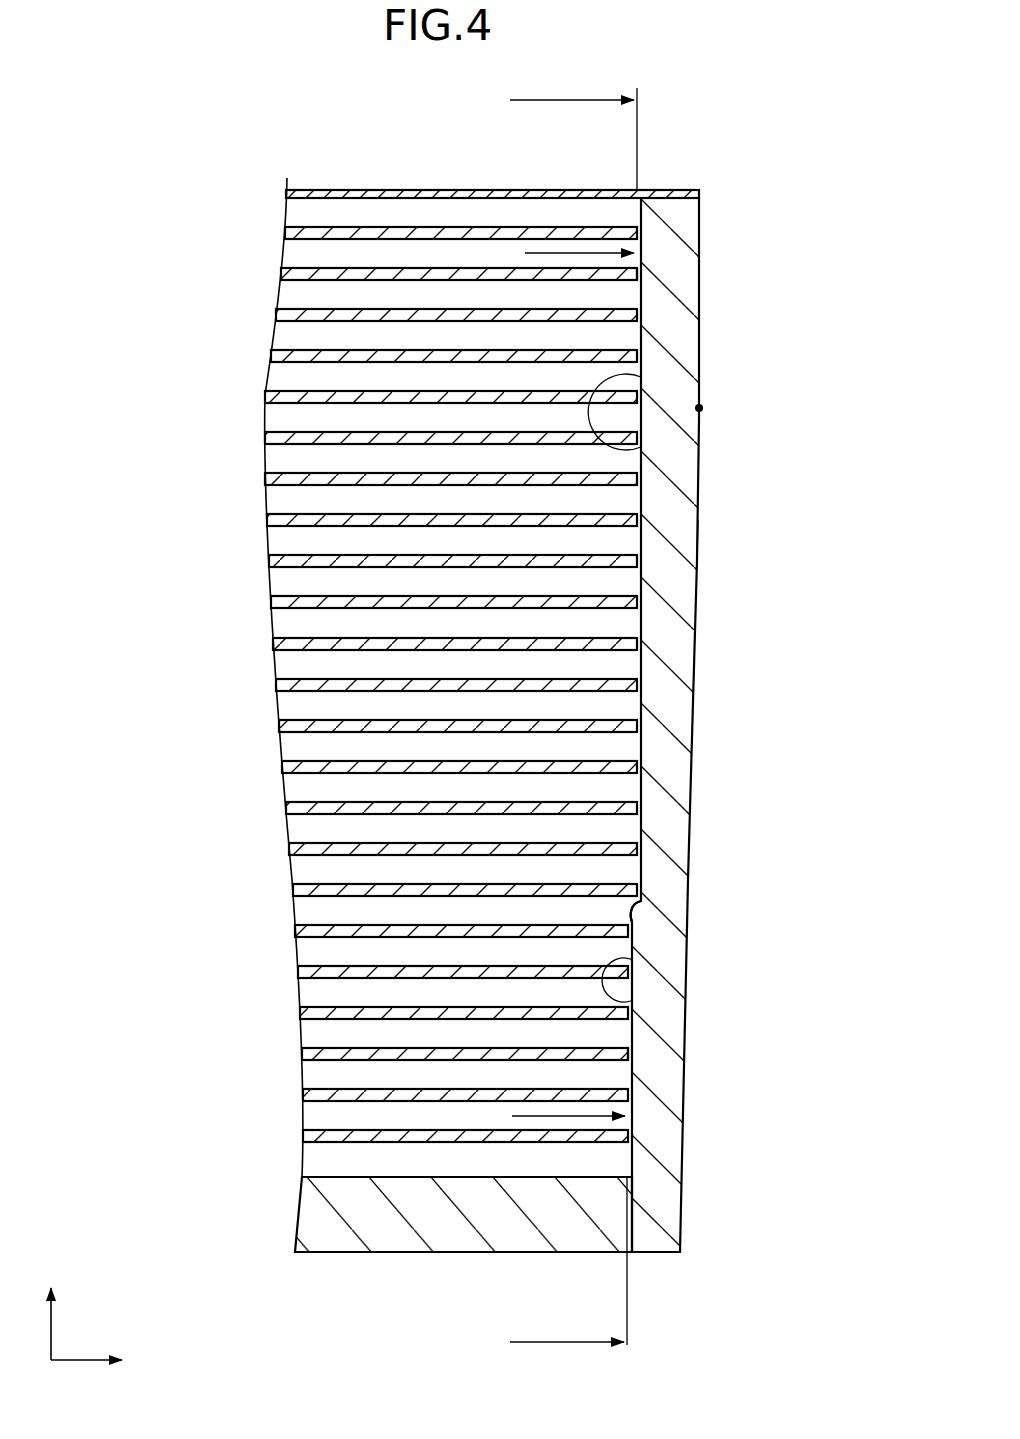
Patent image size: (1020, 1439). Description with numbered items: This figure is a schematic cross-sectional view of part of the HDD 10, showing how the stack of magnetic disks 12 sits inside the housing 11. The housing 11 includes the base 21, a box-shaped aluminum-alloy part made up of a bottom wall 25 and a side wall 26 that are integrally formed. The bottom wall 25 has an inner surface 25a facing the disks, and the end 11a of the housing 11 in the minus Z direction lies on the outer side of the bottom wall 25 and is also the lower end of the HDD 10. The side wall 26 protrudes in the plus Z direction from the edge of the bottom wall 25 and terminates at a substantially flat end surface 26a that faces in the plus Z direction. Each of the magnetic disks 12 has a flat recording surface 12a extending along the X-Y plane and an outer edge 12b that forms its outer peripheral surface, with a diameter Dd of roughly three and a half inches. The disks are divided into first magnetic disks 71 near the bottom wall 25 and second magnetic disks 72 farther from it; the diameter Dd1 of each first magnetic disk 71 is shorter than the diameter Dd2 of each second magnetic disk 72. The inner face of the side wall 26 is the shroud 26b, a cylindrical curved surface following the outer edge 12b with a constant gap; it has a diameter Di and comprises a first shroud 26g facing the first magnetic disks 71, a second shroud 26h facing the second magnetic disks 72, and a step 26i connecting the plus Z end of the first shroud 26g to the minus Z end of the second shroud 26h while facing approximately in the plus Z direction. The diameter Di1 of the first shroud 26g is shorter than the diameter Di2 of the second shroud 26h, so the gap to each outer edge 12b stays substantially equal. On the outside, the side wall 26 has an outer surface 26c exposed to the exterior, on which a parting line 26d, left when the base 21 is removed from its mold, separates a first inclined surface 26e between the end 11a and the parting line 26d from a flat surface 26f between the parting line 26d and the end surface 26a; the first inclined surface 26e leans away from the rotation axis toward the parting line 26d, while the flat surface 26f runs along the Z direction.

The HDD 10 is at (124, 122).
The housing 11 is at (693, 184).
The end 11a is at (312, 1252).
The magnetic disks 12 is at (297, 274).
The recording surface 12a is at (378, 226).
The outer edge 12b is at (641, 268).
The base 21 is at (680, 601).
The bottom wall 25 is at (308, 1212).
The inner surface 25a is at (326, 1176).
The side wall 26 is at (711, 725).
The end surface 26a is at (645, 189).
The shroud 26b is at (617, 450).
The outer surface 26c is at (696, 540).
The parting line 26d is at (703, 409).
The first inclined surface 26e is at (697, 540).
The flat surface 26f is at (698, 322).
The first shroud 26g is at (628, 1002).
The second shroud 26h is at (614, 412).
The step 26i is at (640, 903).
The first magnetic disks 71 is at (461, 1033).
The second magnetic disks 72 is at (451, 561).
The diameter Dd is at (573, 724).
The diameter Dd1 is at (568, 1274).
The diameter Dd2 is at (573, 133).
The diameter Di is at (567, 721).
The diameter Di1 is at (540, 1117).
The diameter Di2 is at (547, 247).